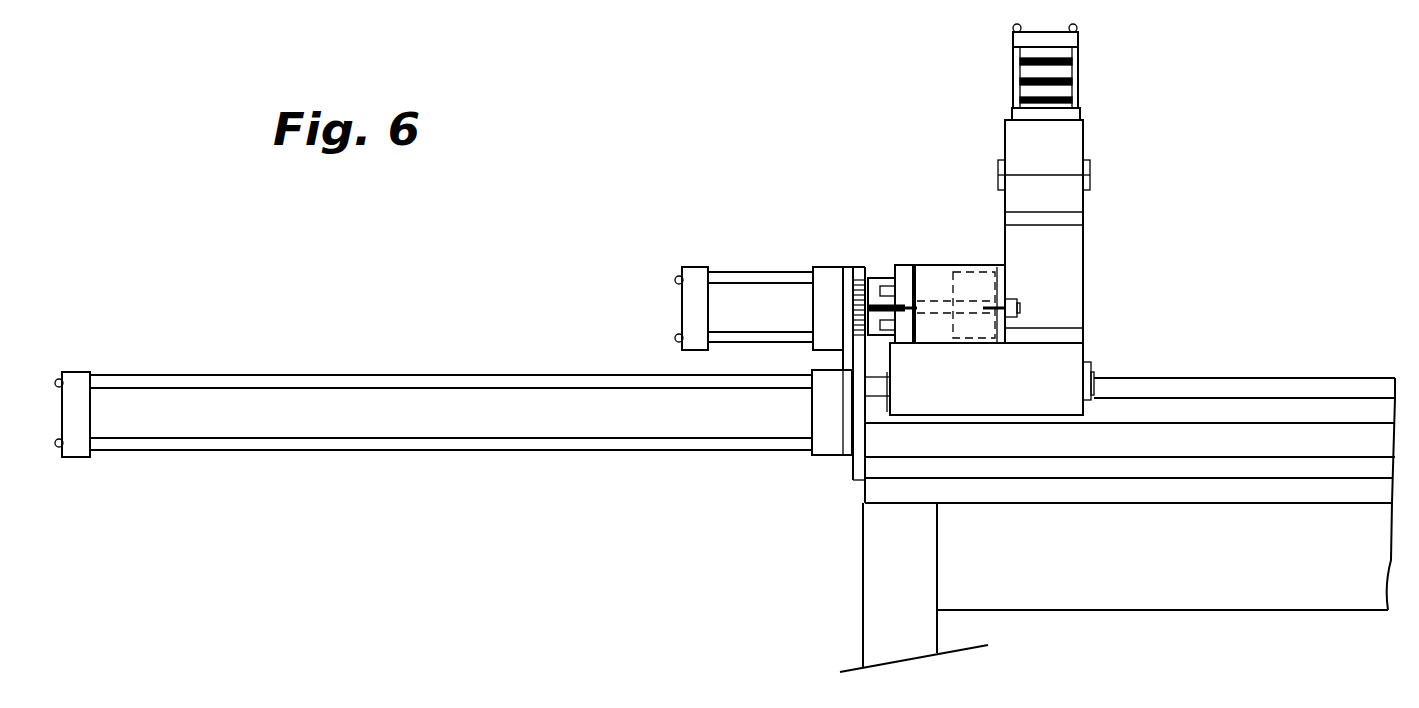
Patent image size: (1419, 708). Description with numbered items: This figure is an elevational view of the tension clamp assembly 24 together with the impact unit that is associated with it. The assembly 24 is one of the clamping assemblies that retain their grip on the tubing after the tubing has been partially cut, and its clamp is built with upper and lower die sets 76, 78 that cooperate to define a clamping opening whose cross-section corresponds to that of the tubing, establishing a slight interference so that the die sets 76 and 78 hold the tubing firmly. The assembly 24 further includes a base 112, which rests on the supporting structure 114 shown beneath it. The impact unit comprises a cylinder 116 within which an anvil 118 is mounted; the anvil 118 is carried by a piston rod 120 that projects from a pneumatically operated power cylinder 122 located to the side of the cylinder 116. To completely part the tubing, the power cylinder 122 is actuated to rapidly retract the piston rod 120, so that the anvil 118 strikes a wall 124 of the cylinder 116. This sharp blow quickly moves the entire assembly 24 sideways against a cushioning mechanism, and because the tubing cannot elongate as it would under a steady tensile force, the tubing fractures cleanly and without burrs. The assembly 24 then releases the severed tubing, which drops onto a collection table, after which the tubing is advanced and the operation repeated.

The clamping assembly 24 is at (953, 115).
The upper die set 76 is at (1090, 167).
The lower die set 78 is at (1090, 185).
The base 112 is at (988, 400).
The table 114 is at (1120, 386).
The cylinder 116 is at (957, 265).
The anvil 118 is at (985, 288).
The piston rod 120 is at (912, 302).
The pneumatically operated power cylinder 122 is at (748, 287).
The wall 124 is at (903, 275).